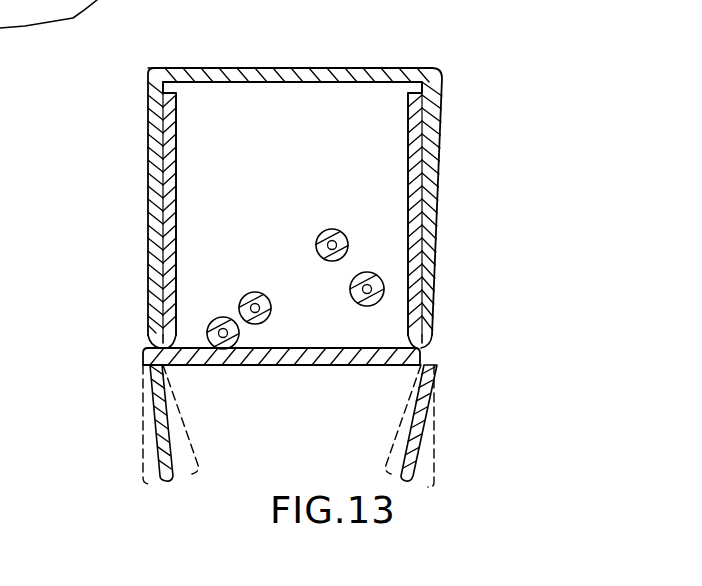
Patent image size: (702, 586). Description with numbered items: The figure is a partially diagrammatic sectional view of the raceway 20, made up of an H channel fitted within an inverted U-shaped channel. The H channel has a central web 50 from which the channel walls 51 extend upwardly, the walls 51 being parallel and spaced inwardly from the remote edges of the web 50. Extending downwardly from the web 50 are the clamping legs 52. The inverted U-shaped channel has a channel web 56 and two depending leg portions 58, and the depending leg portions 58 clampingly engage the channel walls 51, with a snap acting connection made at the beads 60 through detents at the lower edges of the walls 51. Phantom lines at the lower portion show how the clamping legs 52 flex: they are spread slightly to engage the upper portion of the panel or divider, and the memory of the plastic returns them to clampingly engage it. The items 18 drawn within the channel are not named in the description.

The container 20 is at (470, 96).
The top wall 56 is at (285, 68).
The outer side wall 58 is at (148, 157).
The inner liner 51 is at (176, 170).
The protrusion 60 is at (176, 331).
The bottom wall 50 is at (330, 370).
The legs 52 is at (153, 410).
The pellets 18 is at (332, 229).